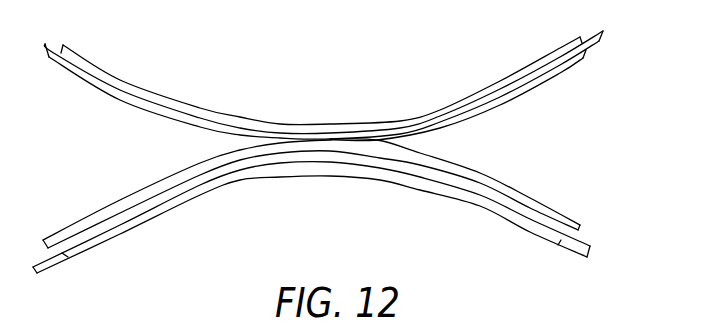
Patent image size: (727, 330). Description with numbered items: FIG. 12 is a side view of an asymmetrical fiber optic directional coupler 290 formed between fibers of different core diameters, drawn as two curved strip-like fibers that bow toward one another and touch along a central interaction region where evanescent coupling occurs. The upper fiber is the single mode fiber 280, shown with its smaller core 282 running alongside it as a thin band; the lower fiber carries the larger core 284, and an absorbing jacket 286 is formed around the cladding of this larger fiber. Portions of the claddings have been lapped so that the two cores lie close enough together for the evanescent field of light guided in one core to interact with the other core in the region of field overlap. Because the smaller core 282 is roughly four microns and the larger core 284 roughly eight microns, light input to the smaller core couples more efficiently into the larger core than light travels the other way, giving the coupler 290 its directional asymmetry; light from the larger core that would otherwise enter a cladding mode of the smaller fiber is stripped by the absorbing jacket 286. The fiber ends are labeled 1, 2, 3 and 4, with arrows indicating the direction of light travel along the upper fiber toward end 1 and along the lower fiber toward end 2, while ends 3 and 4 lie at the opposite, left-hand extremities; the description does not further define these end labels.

The single mode fiber 280 is at (517, 107).
The smaller core 282 is at (606, 36).
The larger core 284 is at (585, 258).
The absorbing jacket 286 is at (517, 190).
The coupler 290 is at (273, 200).
The first direction arrow 1 is at (483, 78).
The second direction arrow 2 is at (467, 220).
The third end 3 is at (91, 264).
The fourth end 4 is at (97, 44).